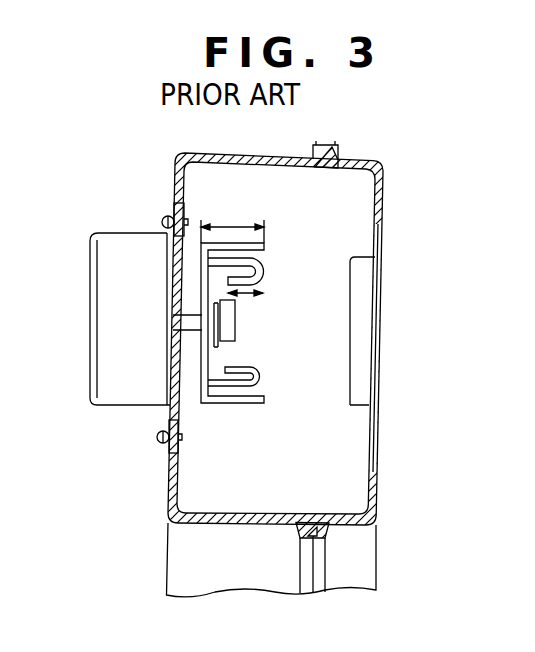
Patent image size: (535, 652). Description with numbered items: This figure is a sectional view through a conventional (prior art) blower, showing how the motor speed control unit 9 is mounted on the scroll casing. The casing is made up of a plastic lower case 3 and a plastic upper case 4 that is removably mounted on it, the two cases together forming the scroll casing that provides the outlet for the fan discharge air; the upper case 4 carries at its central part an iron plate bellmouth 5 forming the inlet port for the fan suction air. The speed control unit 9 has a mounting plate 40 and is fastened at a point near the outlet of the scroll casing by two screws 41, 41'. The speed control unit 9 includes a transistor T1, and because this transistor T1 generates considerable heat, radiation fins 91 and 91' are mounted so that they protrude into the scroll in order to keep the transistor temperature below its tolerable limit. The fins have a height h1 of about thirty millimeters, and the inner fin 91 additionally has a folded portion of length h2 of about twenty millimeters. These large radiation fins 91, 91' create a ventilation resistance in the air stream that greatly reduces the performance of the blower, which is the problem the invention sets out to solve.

The lower case 3 is at (176, 172).
The upper case 4 is at (361, 161).
The iron plate bellmouth 5 is at (371, 257).
The speed control unit 9 is at (93, 404).
The mounting plate 40 is at (176, 212).
The screw 41 is at (150, 219).
The screw 41' is at (135, 439).
The radiation fin 91 is at (232, 348).
The radiation fin 91' is at (256, 407).
The transistor T1 is at (236, 337).
The height of the fins h1 is at (232, 216).
The length of the folded portion h2 is at (252, 297).